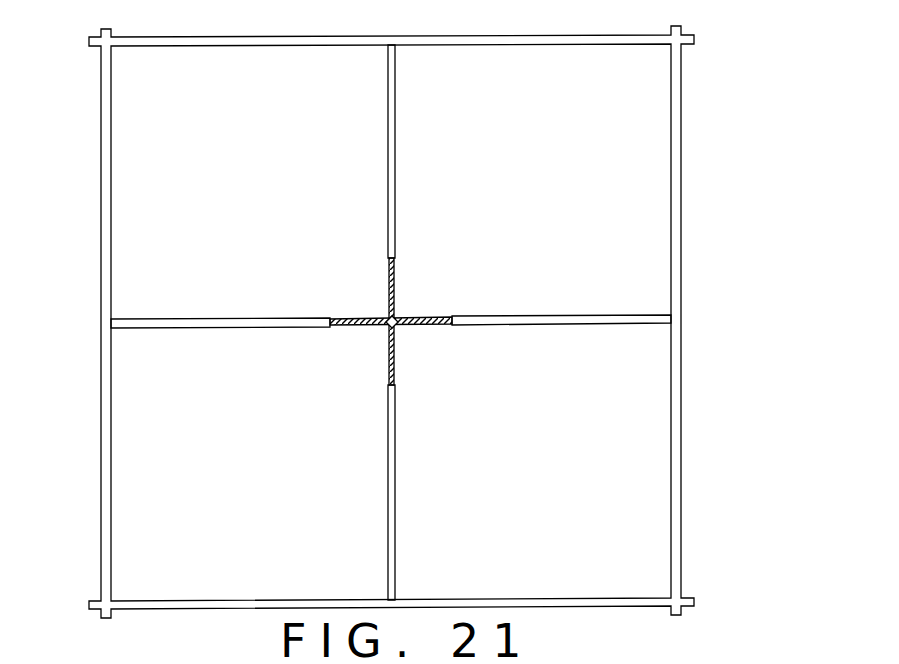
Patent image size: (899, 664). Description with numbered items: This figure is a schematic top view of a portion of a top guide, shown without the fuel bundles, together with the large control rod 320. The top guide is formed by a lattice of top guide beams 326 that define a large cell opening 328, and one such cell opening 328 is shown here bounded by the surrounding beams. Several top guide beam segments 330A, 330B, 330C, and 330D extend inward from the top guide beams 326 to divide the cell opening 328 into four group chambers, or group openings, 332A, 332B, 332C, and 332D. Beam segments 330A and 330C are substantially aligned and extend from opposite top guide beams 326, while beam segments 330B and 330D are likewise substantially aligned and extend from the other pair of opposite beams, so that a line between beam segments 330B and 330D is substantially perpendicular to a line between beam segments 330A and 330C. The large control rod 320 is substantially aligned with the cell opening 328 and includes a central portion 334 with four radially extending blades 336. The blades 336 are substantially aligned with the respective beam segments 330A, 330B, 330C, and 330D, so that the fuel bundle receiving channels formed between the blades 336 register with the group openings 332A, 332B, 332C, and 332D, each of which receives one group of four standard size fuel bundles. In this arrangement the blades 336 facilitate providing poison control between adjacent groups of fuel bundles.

The large control rod 320 is at (397, 290).
The top guide beams 326 is at (280, 40).
The cell opening 328 is at (592, 575).
The top guide beam segment 330A is at (230, 323).
The top guide beam segment 330B is at (394, 133).
The top guide beam segment 330C is at (561, 344).
The top guide beam segment 330D is at (390, 462).
The group opening 332A is at (143, 335).
The group opening 332B is at (189, 50).
The group opening 332C is at (635, 308).
The group opening 332D is at (400, 538).
The central portion 334 is at (396, 318).
The blades 336 is at (393, 277).